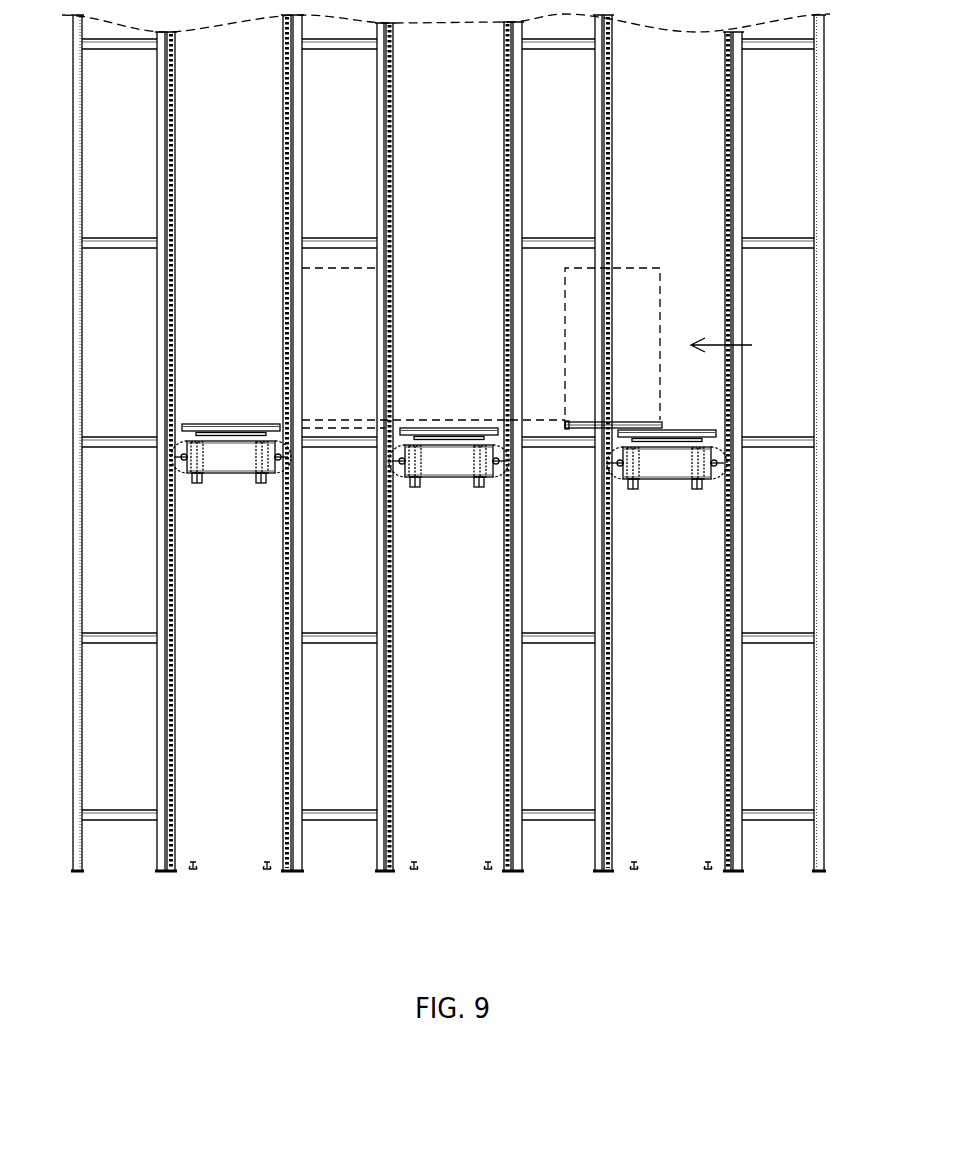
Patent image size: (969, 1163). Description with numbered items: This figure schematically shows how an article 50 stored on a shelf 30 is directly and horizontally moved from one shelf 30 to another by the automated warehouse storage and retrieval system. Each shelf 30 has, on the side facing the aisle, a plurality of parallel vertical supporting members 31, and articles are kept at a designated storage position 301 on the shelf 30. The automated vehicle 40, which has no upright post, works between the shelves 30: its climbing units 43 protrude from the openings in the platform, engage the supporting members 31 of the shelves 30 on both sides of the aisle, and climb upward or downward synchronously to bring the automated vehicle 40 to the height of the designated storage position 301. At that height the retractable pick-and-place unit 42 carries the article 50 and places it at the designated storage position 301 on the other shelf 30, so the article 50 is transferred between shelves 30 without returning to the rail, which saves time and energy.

The shelf 30 is at (283, 852).
The designated storage position 301 is at (528, 268).
The supporting member 31 is at (608, 578).
The automated vehicle 40 is at (408, 421).
The pick-and-place unit 42 is at (587, 420).
The climbing unit 43 is at (610, 462).
The article 50 is at (633, 273).